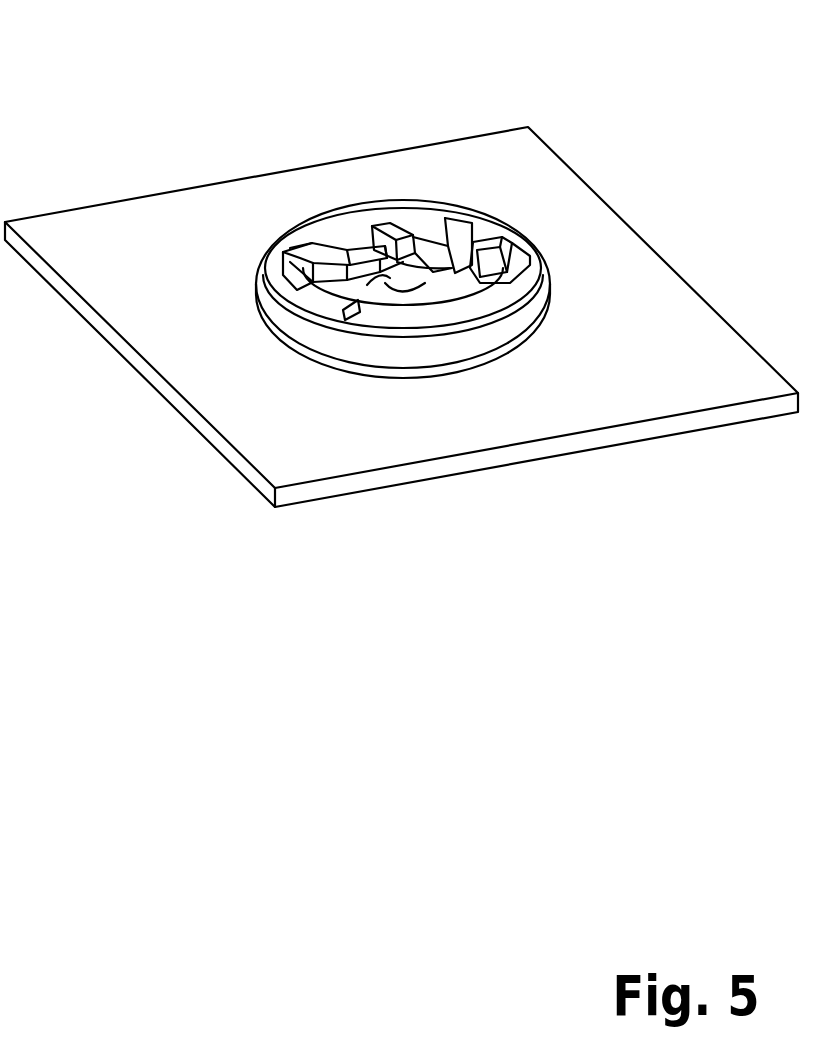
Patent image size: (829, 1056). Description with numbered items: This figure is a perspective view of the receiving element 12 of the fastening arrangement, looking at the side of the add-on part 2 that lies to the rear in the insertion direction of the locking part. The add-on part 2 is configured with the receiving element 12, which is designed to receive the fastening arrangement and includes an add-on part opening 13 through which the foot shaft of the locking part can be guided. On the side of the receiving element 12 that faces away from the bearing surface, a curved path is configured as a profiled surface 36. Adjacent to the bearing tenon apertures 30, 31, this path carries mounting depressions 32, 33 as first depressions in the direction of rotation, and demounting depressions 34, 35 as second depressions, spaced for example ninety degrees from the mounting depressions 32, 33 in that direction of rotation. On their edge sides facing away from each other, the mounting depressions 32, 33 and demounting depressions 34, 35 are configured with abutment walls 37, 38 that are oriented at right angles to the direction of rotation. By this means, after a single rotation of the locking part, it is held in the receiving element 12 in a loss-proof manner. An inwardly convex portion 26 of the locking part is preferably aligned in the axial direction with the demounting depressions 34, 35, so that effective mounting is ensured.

The add-on part 2 is at (635, 386).
The receiving element 12 is at (243, 313).
The add-on part opening 13 is at (415, 320).
The inwardly convex portion 26 is at (440, 288).
The bearing tenon aperture 30 is at (436, 247).
The bearing tenon aperture 31 is at (375, 320).
The mounting depression 32 is at (385, 245).
The mounting depression 33 is at (460, 322).
The demounting depression 34 is at (293, 287).
The demounting depression 35 is at (508, 273).
The profiled surface 36 is at (306, 280).
The abutment wall 37 is at (355, 252).
The abutment wall 38 is at (500, 280).